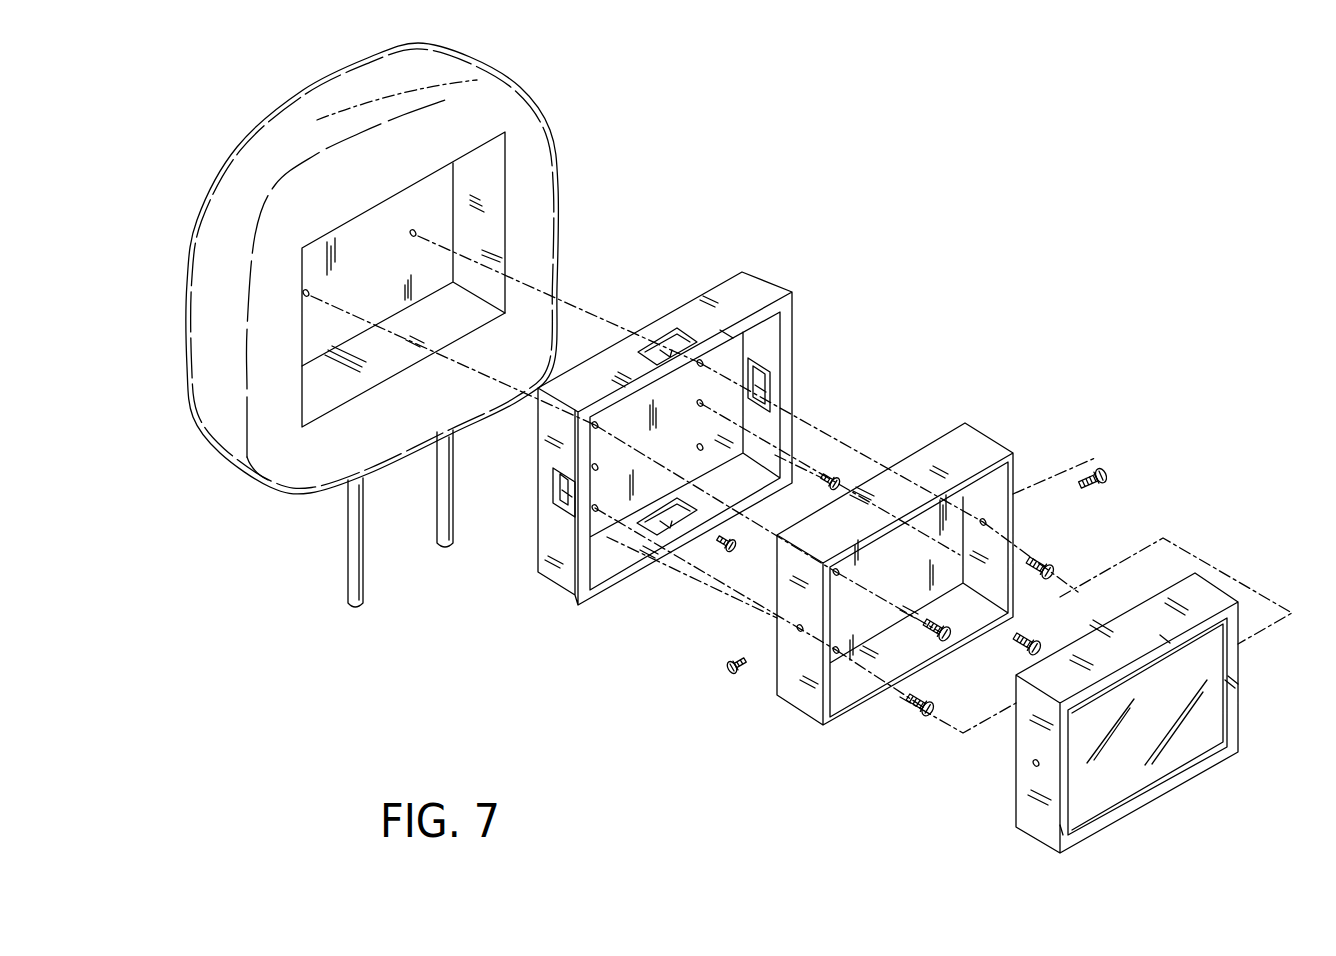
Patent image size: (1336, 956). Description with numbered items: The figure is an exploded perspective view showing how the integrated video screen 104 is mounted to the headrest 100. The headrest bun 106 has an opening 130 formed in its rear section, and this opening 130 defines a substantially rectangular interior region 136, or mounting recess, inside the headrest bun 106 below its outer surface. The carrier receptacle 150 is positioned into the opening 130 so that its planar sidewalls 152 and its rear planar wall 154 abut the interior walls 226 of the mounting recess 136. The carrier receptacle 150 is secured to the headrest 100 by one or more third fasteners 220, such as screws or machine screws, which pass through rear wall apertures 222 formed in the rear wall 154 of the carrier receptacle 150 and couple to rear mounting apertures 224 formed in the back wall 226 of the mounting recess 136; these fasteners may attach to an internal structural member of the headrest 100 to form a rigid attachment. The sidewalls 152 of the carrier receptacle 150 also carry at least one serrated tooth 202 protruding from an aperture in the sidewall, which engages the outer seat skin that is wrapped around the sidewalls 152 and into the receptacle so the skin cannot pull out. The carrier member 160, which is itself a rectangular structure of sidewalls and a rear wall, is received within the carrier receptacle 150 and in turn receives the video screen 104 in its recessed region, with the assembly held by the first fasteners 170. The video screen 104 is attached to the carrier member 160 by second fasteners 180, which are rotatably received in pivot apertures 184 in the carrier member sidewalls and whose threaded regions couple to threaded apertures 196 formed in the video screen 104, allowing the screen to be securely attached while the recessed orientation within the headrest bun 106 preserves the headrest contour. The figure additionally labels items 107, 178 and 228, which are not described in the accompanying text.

The headrest 100 is at (665, 126).
The video screen 104 is at (1203, 597).
The headrest bun 106 is at (500, 115).
The headrest posts 107 is at (367, 545).
The opening 130 is at (446, 313).
The interior region 136 is at (378, 243).
The carrier receptacle 150 is at (755, 293).
The planar sidewalls 152 is at (558, 570).
The rear planar wall 154 is at (613, 503).
The carrier member 160 is at (963, 445).
The first fasteners 170 is at (1060, 574).
The mounting holes of mounting frame 178 is at (705, 360).
The second fasteners 180 is at (734, 680).
The pivot apertures 184 is at (800, 635).
The threaded apertures 196 is at (1033, 766).
The serrated tooth 202 is at (670, 348).
The third fasteners 220 is at (835, 480).
The rear wall apertures 222 is at (708, 402).
The rear mounting apertures 224 is at (415, 228).
The interior walls 226 is at (335, 390).
The hole in headrest cavity 228 is at (325, 335).